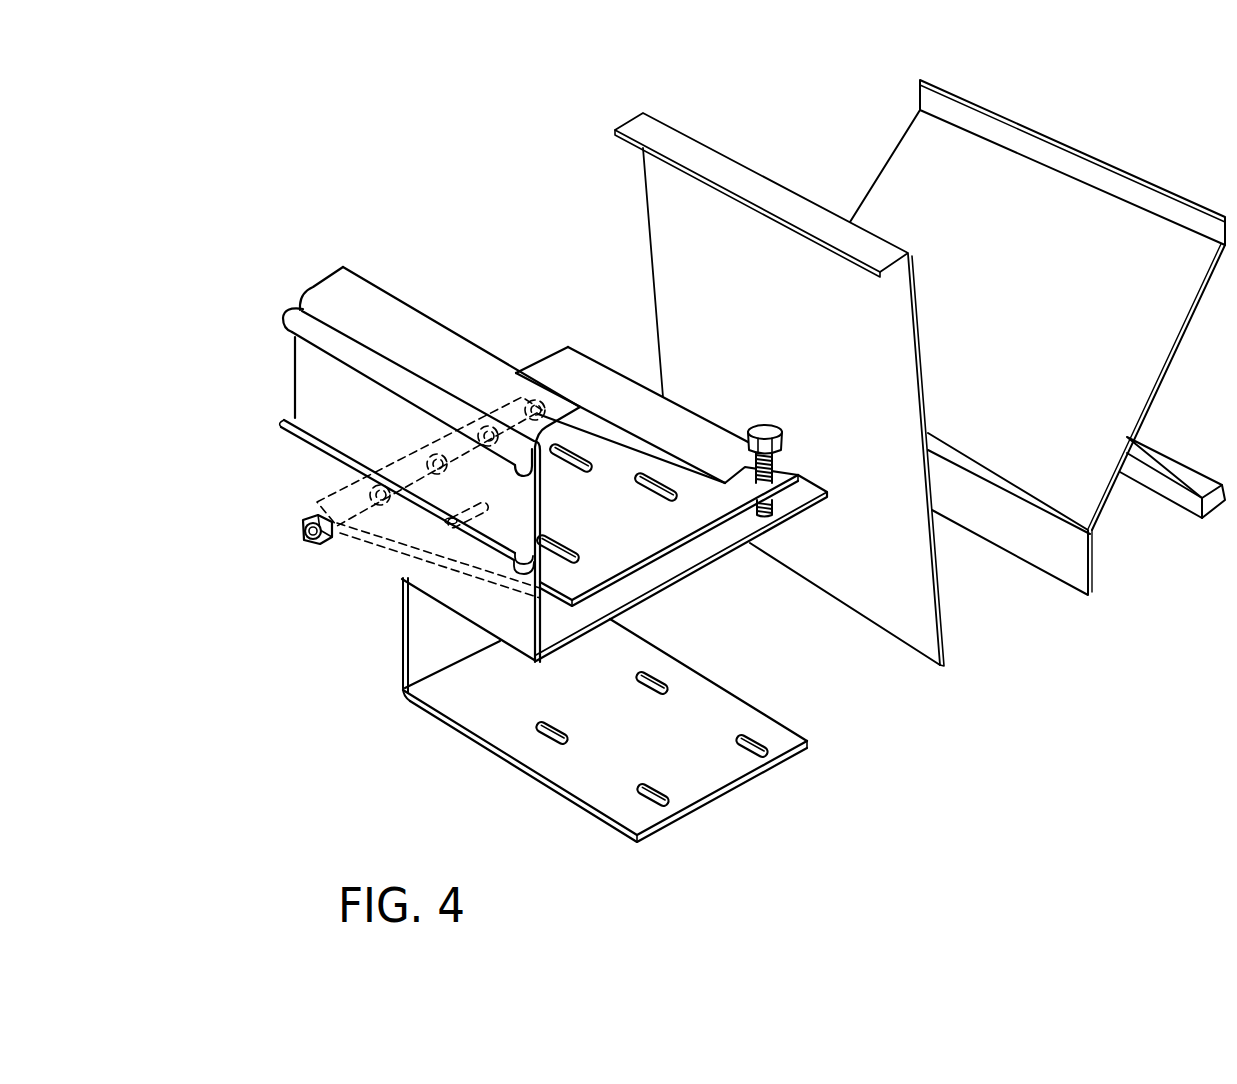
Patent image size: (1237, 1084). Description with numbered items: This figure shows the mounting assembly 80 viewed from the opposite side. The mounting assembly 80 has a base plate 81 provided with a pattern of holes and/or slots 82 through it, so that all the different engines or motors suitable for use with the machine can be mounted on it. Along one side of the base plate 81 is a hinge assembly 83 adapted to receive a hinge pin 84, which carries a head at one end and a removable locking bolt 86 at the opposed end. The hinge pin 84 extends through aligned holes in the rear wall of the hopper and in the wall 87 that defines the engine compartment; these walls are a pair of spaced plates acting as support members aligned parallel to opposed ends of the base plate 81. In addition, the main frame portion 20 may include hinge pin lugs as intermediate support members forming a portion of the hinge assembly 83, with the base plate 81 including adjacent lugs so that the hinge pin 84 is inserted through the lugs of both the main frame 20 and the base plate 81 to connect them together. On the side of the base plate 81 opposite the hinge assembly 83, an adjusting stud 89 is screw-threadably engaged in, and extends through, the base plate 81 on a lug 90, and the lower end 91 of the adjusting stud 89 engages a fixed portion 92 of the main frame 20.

The mounting assembly 80 is at (515, 190).
The main frame portion 20 is at (677, 599).
The base plate 81 is at (628, 539).
The holes and/or slots 82 is at (587, 447).
The hinge assembly 83 is at (460, 425).
The hinge pin 84 is at (302, 534).
The removable locking bolt 86 is at (328, 545).
The wall 87 is at (297, 455).
The adjusting stud 89 is at (773, 470).
The lug 90 is at (742, 487).
The lower end 91 is at (771, 507).
The fixed portion 92 is at (750, 541).